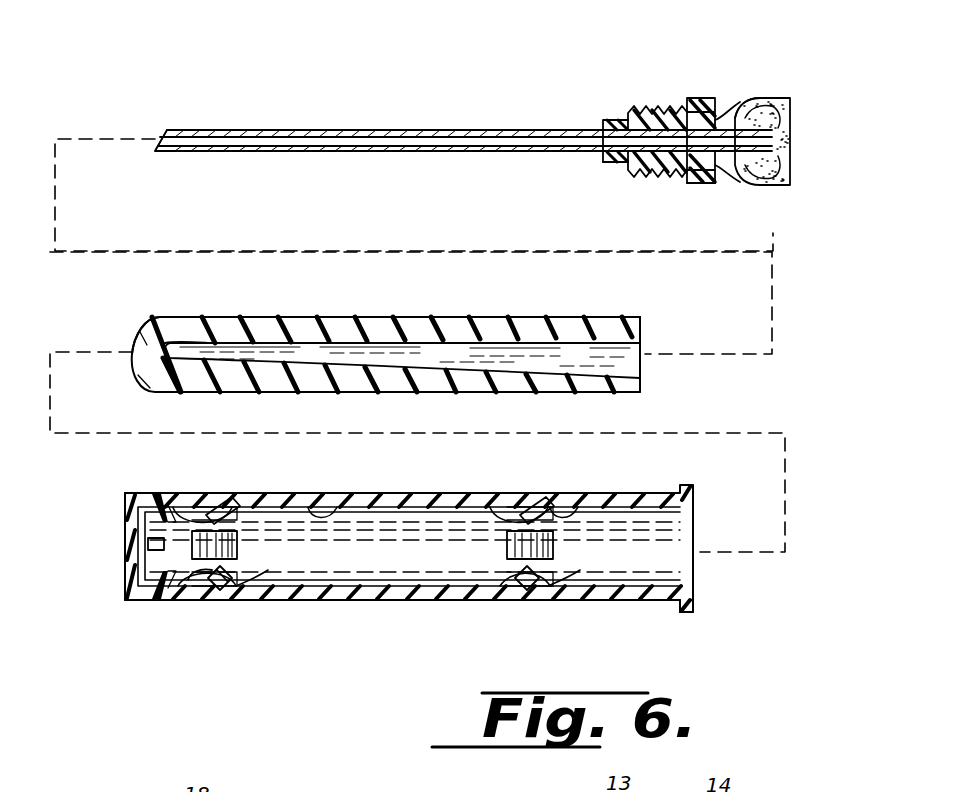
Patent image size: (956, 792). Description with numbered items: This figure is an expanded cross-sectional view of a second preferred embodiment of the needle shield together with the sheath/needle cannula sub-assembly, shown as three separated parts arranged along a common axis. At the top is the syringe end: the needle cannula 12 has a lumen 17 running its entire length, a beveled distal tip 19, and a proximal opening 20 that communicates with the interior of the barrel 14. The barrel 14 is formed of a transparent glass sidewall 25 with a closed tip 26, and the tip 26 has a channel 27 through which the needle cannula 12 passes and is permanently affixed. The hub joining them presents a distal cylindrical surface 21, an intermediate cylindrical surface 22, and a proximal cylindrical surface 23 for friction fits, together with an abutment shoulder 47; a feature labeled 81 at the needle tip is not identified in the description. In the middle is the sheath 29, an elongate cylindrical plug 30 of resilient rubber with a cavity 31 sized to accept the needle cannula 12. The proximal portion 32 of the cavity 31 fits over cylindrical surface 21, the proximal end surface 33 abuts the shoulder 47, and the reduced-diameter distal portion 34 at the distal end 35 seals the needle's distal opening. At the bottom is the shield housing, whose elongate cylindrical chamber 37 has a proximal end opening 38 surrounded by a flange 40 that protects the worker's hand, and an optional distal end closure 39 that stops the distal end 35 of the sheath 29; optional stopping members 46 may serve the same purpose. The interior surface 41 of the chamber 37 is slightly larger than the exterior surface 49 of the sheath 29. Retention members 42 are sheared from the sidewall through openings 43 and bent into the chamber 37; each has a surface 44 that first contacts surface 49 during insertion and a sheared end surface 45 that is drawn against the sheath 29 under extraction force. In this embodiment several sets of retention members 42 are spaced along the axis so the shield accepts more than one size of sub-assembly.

The needle cannula 12 is at (463, 137).
The syringe barrel 14 is at (731, 124).
The lumen 17 is at (352, 130).
The beveled distal tip 19 is at (155, 150).
The proximal opening 20 is at (770, 186).
The distal cylindrical surface 21 is at (612, 120).
The intermediate cylindrical surface 22 is at (650, 108).
The proximal cylindrical surface 23 is at (702, 97).
The glass sidewall 25 is at (770, 100).
The closed tip 26 is at (700, 184).
The channel 27 is at (728, 175).
The sheath 29 is at (394, 345).
The cylindrical plug 30 is at (267, 330).
The cavity 31 is at (472, 345).
The proximal portion of cavity 32 is at (643, 362).
The proximal end surface 33 is at (643, 327).
The distal portion of cavity 34 is at (192, 350).
The distal end of sheath 35 is at (148, 342).
The chamber 37 is at (392, 555).
The proximal end opening 38 is at (696, 520).
The distal end closure 39 is at (126, 506).
The flange 40 is at (686, 612).
The interior surface 41 is at (346, 518).
The retention member 42 is at (224, 500).
The opening 43 is at (210, 508).
The surface of retention member 44 is at (320, 515).
The sheared end surface 45 is at (180, 508).
The stopping members 46 is at (158, 502).
The abutment shoulder 47 is at (628, 164).
The exterior surface of sheath 49 is at (340, 392).
The tube tip 81 is at (167, 135).